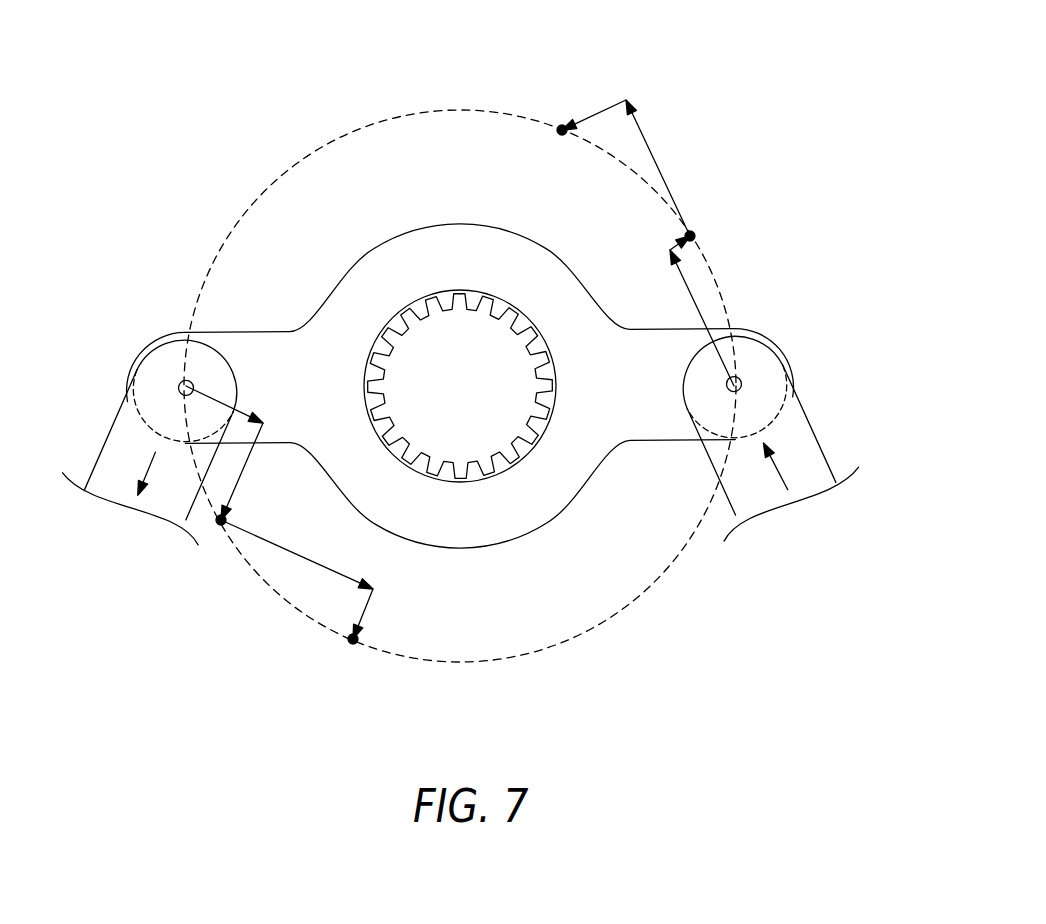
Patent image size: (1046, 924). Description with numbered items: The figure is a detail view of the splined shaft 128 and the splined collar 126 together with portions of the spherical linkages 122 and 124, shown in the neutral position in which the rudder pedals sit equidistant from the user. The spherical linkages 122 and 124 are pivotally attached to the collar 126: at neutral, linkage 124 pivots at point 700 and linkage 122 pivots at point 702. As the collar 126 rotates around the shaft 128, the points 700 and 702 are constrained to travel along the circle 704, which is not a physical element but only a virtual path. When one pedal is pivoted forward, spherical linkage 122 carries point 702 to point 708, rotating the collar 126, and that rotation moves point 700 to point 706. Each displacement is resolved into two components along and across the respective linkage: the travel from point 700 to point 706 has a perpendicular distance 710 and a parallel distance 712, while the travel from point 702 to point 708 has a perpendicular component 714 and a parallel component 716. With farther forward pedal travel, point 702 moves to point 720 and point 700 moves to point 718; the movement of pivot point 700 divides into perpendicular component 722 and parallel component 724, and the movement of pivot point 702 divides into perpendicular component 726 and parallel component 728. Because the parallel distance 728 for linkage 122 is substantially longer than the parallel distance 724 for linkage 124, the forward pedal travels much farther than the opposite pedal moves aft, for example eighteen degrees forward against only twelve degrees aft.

The spherical linkage 122 is at (818, 453).
The spherical linkage 124 is at (103, 467).
The splined collar 126 is at (367, 268).
The splined shaft 128 is at (460, 313).
The pivot point 700 is at (183, 378).
The pivot point 702 is at (740, 378).
The circle 704 is at (342, 135).
The point 706 is at (220, 521).
The point 708 is at (698, 233).
The distance 710 is at (216, 397).
The distance 712 is at (238, 484).
The perpendicular component 714 is at (670, 242).
The parallel component 716 is at (696, 309).
The point 718 is at (351, 644).
The point 720 is at (560, 124).
The perpendicular component 722 is at (292, 551).
The parallel component 724 is at (364, 620).
The perpendicular component 726 is at (603, 108).
The parallel component 728 is at (650, 143).